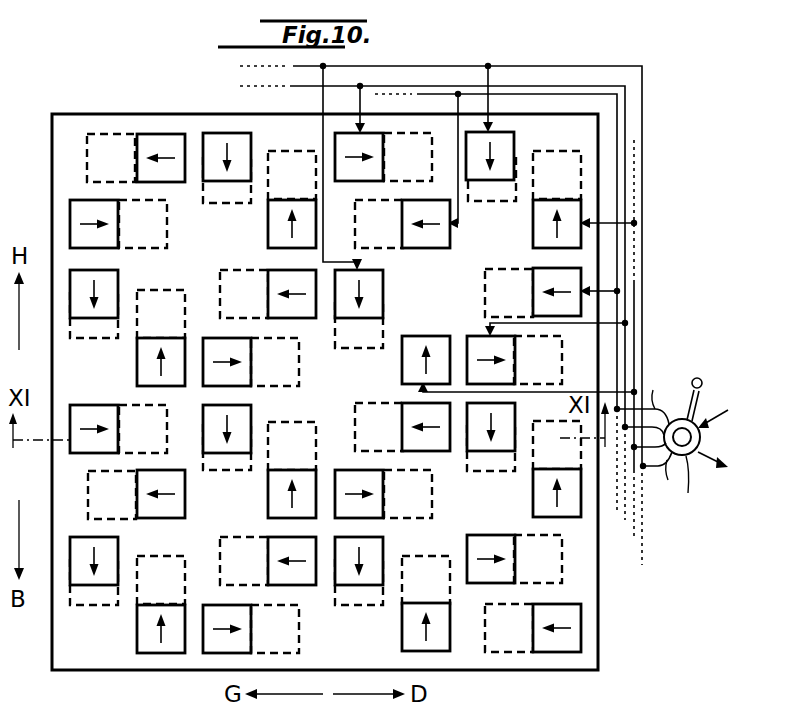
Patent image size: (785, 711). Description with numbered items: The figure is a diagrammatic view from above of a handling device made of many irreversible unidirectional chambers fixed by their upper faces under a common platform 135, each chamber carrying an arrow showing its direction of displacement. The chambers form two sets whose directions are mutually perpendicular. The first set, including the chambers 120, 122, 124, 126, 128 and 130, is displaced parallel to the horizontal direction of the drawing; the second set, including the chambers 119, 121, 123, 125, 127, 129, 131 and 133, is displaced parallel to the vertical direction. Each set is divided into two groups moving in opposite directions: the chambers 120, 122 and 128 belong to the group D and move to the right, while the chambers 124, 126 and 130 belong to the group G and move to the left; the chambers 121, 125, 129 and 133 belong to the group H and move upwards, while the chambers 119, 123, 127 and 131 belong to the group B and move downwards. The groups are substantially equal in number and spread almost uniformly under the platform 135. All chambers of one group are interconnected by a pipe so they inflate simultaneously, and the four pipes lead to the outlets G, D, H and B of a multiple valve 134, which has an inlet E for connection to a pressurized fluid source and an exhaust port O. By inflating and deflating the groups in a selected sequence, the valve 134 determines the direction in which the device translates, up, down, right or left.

The irreversible unidirectional chamber 119 is at (112, 280).
The irreversible unidirectional chamber 120 is at (92, 410).
The irreversible unidirectional chamber 121 is at (137, 352).
The irreversible unidirectional chamber 122 is at (243, 375).
The irreversible unidirectional chamber 123 is at (222, 447).
The irreversible unidirectional chamber 124 is at (278, 274).
The irreversible unidirectional chamber 125 is at (278, 492).
The irreversible unidirectional chamber 126 is at (412, 410).
The irreversible unidirectional chamber 127 is at (375, 276).
The irreversible unidirectional chamber 128 is at (513, 356).
The irreversible unidirectional chamber 129 is at (402, 352).
The irreversible unidirectional chamber 130 is at (540, 270).
The irreversible unidirectional chamber 131 is at (478, 447).
The irreversible unidirectional chamber 133 is at (533, 500).
The multiple valve 134 is at (673, 441).
The common platform 135 is at (88, 665).